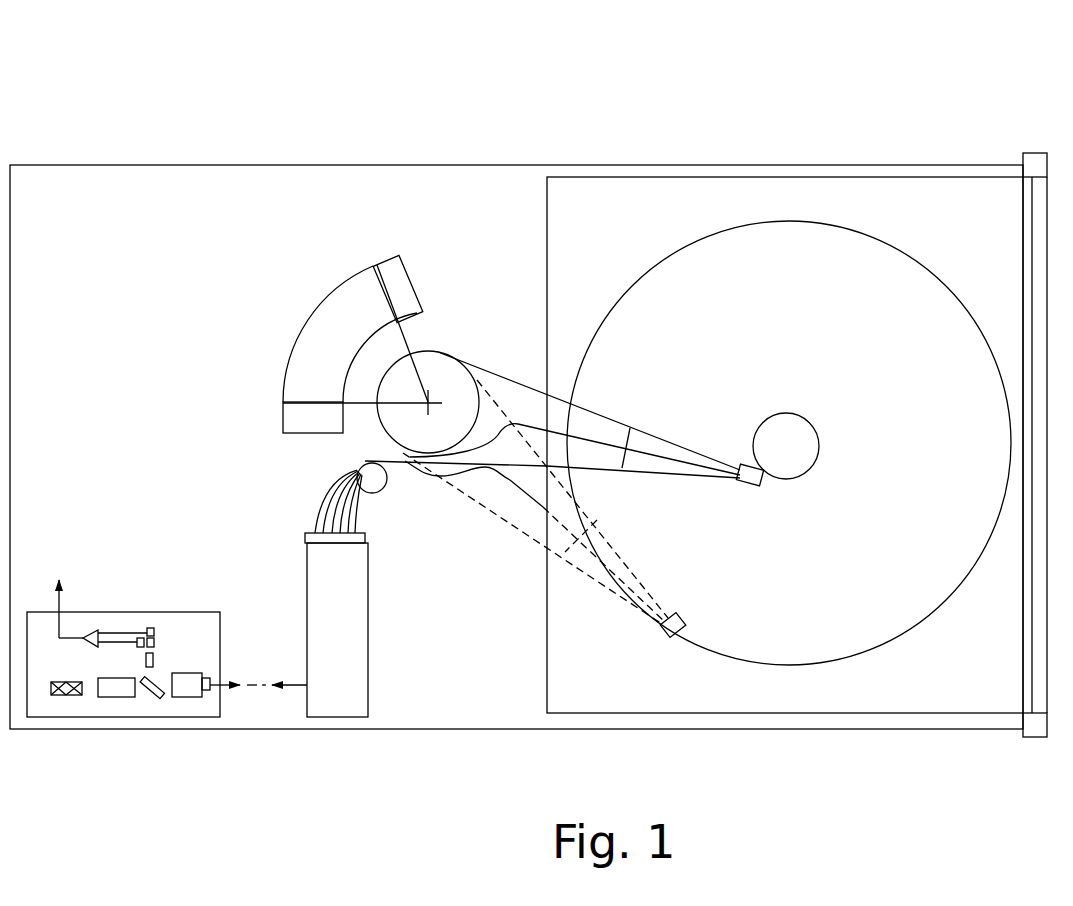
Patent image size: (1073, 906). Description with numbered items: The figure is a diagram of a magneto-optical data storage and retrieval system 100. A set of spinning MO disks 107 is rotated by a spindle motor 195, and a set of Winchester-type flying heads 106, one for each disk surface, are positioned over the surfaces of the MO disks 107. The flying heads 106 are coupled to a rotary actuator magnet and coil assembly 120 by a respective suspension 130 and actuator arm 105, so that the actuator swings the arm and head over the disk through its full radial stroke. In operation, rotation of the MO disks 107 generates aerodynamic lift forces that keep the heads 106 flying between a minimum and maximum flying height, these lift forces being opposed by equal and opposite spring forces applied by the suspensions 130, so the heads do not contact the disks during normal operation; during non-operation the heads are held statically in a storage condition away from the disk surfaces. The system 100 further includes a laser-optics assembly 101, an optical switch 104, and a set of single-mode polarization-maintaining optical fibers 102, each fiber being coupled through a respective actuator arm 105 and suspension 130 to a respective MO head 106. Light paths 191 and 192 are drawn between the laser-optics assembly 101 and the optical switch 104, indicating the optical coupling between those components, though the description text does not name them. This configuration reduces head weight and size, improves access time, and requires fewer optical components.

The magneto-optical data storage and retrieval system 100 is at (790, 54).
The laser-optics assembly 101 is at (82, 719).
The single-mode PM optical fibers 102 is at (318, 478).
The optical switch 104 is at (378, 612).
The actuator arm 105 is at (605, 425).
The flying heads 106 is at (757, 488).
The MO disks 107 is at (800, 219).
The rotary actuator magnet and coil assembly 120 is at (375, 268).
The suspension 130 is at (683, 452).
The outgoing light beam 191 is at (243, 695).
The returning light beam 192 is at (281, 695).
The spindle motor 195 is at (798, 433).